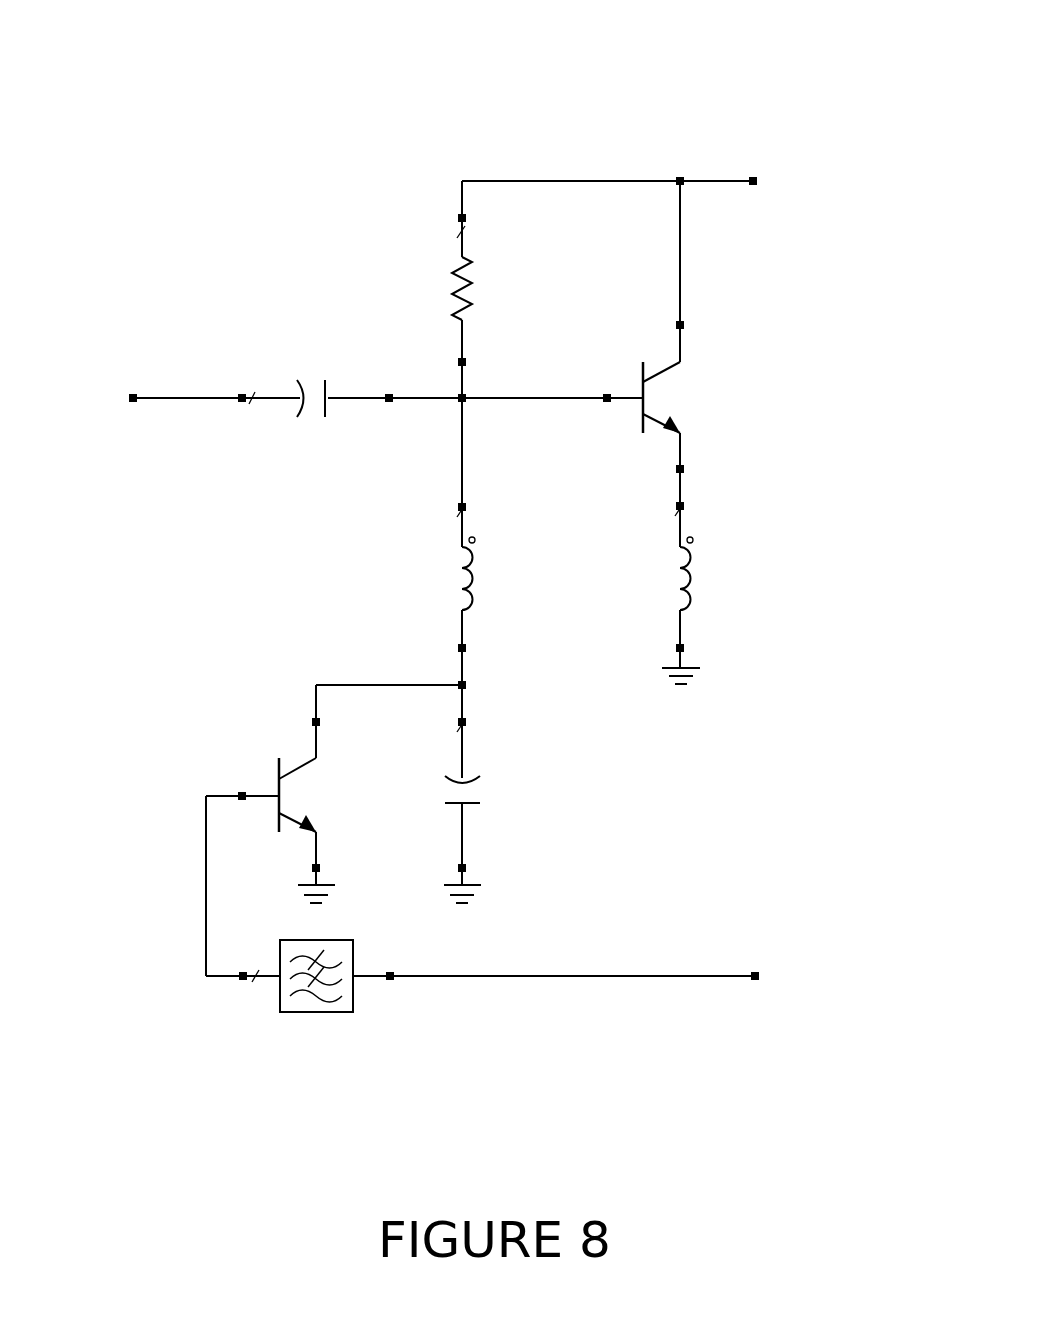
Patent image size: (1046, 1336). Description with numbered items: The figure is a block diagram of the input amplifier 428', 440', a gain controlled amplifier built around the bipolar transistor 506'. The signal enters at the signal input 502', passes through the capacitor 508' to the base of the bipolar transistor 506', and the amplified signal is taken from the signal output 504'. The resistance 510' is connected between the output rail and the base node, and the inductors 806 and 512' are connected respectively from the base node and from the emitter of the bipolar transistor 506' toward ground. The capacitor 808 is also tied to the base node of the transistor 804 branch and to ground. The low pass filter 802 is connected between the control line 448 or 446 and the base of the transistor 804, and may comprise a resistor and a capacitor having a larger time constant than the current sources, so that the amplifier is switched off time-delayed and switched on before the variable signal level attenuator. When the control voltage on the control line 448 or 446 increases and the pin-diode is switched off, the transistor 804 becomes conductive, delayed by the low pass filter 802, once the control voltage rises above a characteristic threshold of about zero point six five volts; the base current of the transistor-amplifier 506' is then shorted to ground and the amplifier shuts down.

The amplifier circuit 428' is at (475, 563).
The low noise amplifier 440' is at (475, 563).
The signal input 502' is at (125, 441).
The signal output 504' is at (805, 220).
The bipolar transistor 506' is at (750, 307).
The capacitor 508' is at (253, 343).
The resistance 510' is at (415, 270).
The inductor 512' is at (756, 610).
The low pass filter 802 is at (300, 1000).
The transistor 804 is at (298, 792).
The inductor 806 is at (480, 598).
The capacitor 808 is at (470, 783).
The control line 448 is at (569, 1031).
The control line 446 is at (533, 976).